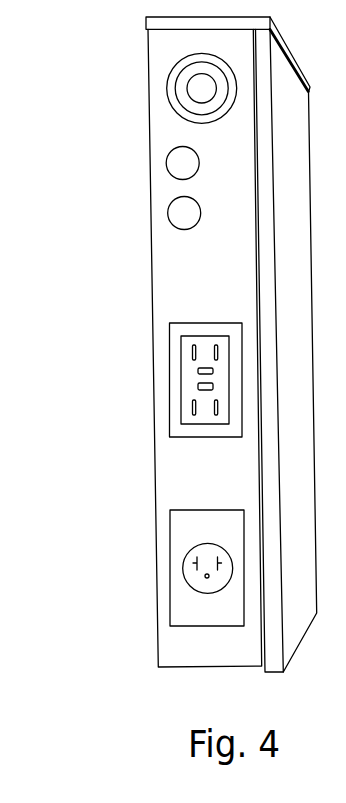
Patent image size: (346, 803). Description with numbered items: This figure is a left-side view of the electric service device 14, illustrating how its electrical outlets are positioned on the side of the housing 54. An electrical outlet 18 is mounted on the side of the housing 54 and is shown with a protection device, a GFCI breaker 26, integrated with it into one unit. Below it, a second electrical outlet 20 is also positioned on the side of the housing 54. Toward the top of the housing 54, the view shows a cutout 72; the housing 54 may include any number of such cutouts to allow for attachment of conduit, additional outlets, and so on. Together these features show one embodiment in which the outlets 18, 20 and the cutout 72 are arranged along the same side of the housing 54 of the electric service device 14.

The electric service device 14 is at (110, 78).
The cutout 72 is at (168, 203).
The housing 54 is at (155, 283).
The electrical outlet 18 is at (187, 343).
The GFCI breaker 26 is at (197, 387).
The electrical outlet 20 is at (187, 584).